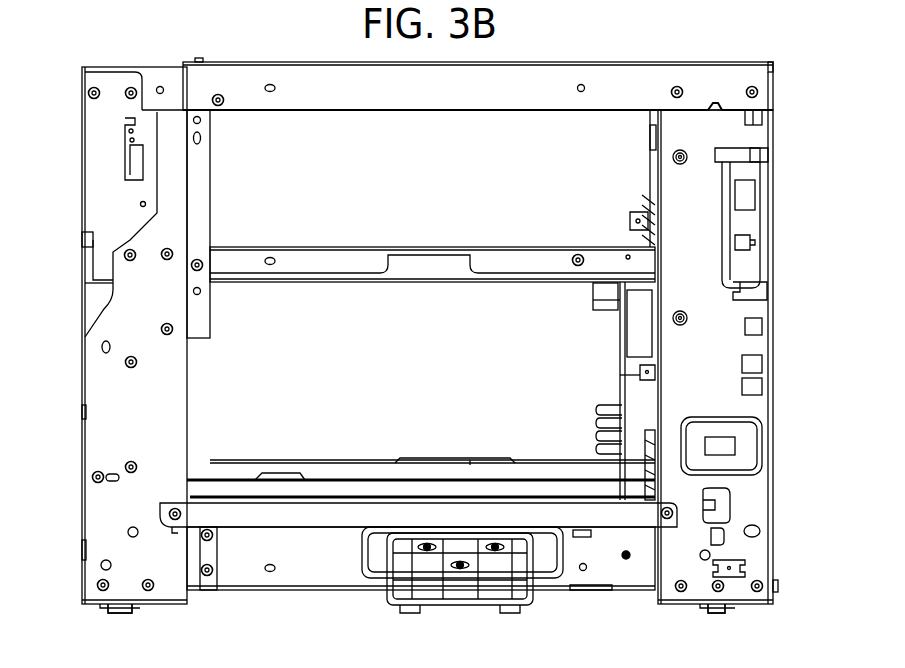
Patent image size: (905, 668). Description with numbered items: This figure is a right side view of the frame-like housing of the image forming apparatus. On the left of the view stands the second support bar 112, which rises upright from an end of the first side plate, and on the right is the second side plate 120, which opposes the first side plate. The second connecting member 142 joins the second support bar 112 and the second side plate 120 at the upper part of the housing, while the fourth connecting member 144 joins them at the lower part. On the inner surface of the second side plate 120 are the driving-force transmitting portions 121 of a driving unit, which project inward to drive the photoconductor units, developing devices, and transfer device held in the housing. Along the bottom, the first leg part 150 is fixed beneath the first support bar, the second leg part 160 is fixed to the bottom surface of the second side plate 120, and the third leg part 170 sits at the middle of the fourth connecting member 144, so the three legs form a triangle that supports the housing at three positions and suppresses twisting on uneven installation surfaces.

The second support bar 112 is at (112, 428).
The second side plate 120 is at (735, 413).
The driving-force transmitting portions 121 is at (612, 408).
The second connecting member 142 is at (354, 95).
The fourth connecting member 144 is at (298, 547).
The first leg part 150 is at (128, 607).
The second leg part 160 is at (713, 612).
The third leg part 170 is at (403, 568).